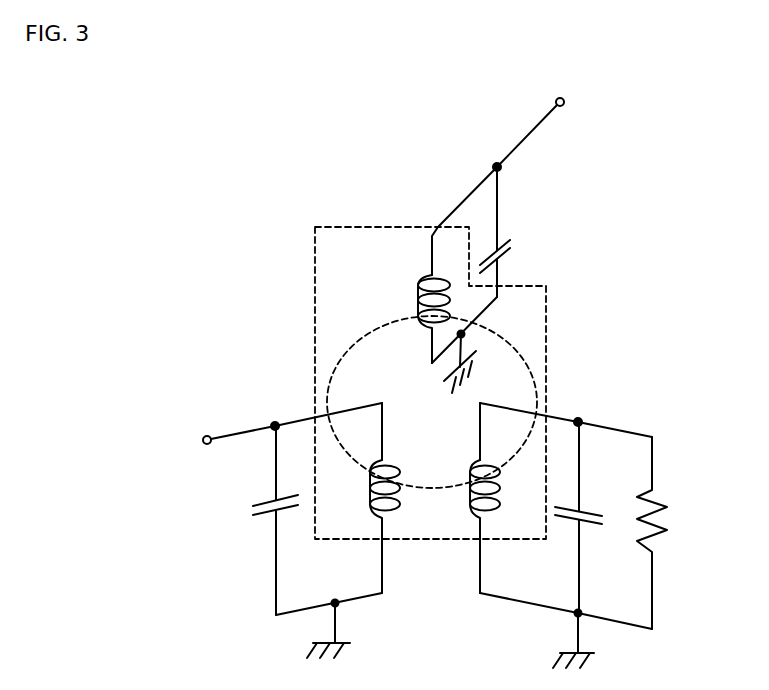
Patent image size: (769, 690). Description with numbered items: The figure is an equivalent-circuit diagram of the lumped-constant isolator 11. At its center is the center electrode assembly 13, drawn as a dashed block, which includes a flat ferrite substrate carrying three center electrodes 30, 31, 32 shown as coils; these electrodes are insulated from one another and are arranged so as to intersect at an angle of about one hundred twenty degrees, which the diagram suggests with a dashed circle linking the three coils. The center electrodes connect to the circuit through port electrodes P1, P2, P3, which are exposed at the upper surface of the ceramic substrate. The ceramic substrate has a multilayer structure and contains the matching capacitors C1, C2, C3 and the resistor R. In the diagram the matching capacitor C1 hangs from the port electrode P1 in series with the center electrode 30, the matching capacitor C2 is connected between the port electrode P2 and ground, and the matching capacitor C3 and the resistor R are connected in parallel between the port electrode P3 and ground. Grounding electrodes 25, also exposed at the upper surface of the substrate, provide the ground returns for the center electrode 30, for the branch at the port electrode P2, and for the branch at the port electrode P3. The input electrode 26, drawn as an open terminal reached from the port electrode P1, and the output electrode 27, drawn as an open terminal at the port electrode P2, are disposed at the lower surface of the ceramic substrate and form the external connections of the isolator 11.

The lumped-constant isolator 11 is at (203, 116).
The center electrode assembly 13 is at (353, 227).
The grounding electrodes 25 is at (463, 333).
The input electrode 26 is at (564, 104).
The output electrode 27 is at (207, 436).
The center electrode 30 is at (430, 278).
The center electrode 31 is at (370, 520).
The center electrode 32 is at (470, 520).
The port electrode P1 is at (497, 167).
The port electrode P2 is at (275, 417).
The port electrode P3 is at (578, 422).
The matching capacitor C1 is at (503, 252).
The matching capacitor C2 is at (268, 517).
The matching capacitor C3 is at (572, 520).
The resistor R is at (663, 527).